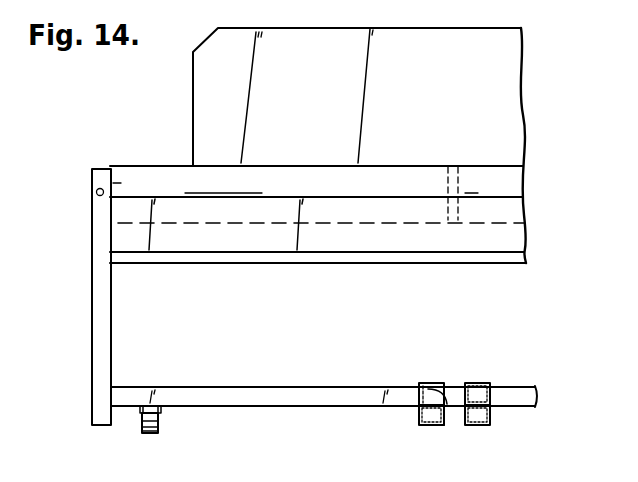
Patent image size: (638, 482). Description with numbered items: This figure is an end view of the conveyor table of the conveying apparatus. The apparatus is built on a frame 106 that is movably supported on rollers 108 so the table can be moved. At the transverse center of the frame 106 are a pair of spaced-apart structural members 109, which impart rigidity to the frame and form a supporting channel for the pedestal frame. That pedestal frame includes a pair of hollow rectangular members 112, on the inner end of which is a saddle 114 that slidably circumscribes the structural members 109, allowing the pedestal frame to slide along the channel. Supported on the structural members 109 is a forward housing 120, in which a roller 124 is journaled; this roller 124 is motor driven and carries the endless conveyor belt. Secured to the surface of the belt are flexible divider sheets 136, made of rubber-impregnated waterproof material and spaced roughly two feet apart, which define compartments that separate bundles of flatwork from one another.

The divider sheet 136 is at (203, 88).
The roller 124 is at (90, 190).
The forward housing 120 is at (97, 290).
The frame 106 is at (280, 393).
The roller 108 is at (154, 421).
The saddle 114 is at (442, 383).
The structural member 109 is at (465, 388).
The hollow rectangular member 112 is at (443, 423).